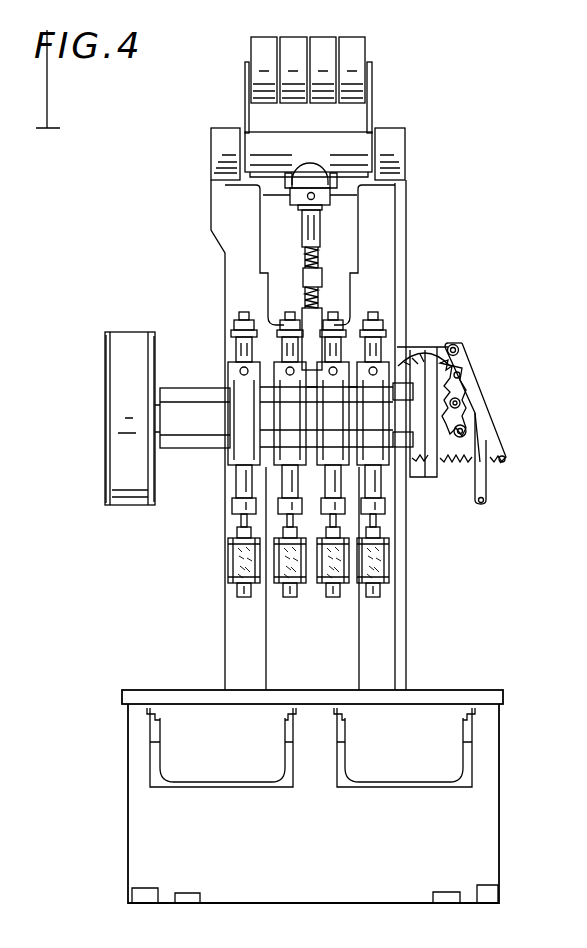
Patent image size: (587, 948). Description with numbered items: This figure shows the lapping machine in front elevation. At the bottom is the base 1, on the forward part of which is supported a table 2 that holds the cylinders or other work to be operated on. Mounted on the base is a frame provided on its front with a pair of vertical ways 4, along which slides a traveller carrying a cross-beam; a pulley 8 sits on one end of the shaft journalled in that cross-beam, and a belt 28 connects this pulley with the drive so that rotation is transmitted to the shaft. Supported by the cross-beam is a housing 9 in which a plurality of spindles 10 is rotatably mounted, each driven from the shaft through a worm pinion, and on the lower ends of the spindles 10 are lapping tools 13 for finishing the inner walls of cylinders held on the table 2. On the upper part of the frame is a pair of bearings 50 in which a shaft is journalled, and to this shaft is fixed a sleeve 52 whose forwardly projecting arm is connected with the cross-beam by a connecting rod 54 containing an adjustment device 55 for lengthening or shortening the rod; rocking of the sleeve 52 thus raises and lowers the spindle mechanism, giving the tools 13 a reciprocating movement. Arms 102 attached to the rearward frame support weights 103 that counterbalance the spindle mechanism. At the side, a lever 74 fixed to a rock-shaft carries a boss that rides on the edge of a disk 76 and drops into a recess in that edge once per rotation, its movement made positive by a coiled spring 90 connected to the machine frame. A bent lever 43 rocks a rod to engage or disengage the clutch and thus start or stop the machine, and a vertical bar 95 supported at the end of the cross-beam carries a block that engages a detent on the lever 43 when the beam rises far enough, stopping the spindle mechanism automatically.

The base 1 is at (477, 812).
The table 2 is at (443, 697).
The vertical ways 4 is at (245, 262).
The pulley 8 is at (105, 353).
The housing 9 is at (205, 418).
The spindles 10 is at (242, 350).
The lapping tools 13 is at (323, 583).
The belt 28 is at (130, 342).
The lever 43 is at (487, 478).
The bearings 50 is at (217, 143).
The sleeve 52 is at (348, 142).
The connecting rod 54 is at (317, 232).
The adjustment device 55 is at (322, 278).
The lever 74 is at (475, 396).
The disk 76 is at (438, 345).
The coiled spring 90 is at (455, 462).
The vertical bar 95 is at (430, 477).
The arms 102 is at (373, 95).
The weights 103 is at (355, 48).